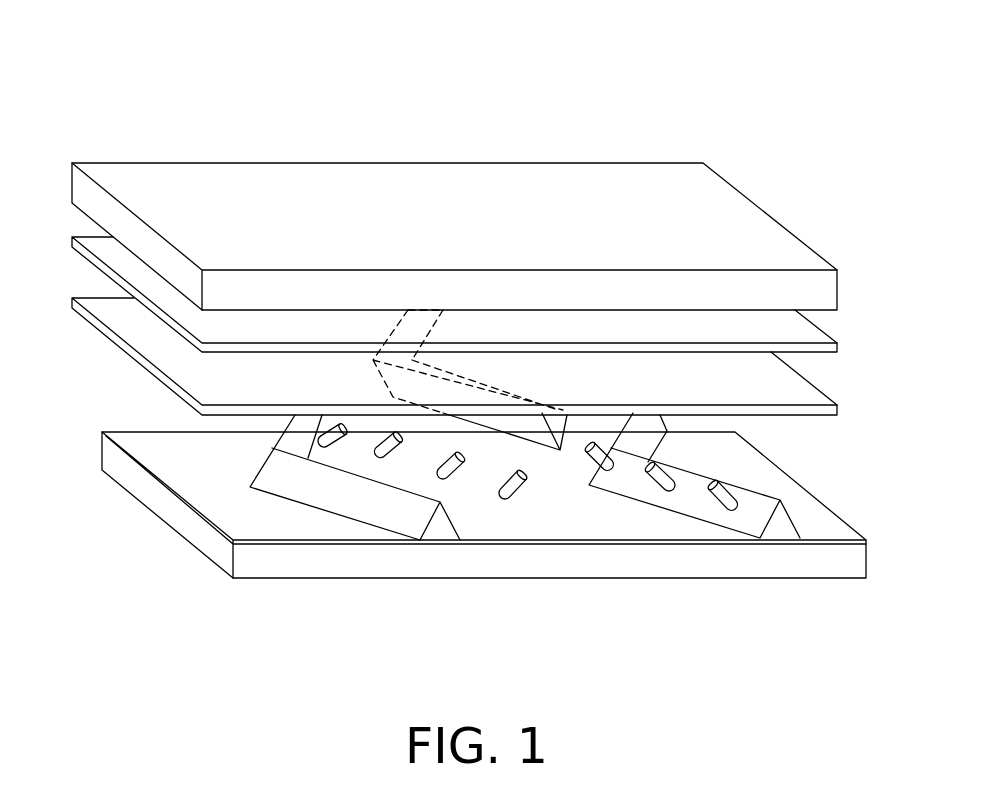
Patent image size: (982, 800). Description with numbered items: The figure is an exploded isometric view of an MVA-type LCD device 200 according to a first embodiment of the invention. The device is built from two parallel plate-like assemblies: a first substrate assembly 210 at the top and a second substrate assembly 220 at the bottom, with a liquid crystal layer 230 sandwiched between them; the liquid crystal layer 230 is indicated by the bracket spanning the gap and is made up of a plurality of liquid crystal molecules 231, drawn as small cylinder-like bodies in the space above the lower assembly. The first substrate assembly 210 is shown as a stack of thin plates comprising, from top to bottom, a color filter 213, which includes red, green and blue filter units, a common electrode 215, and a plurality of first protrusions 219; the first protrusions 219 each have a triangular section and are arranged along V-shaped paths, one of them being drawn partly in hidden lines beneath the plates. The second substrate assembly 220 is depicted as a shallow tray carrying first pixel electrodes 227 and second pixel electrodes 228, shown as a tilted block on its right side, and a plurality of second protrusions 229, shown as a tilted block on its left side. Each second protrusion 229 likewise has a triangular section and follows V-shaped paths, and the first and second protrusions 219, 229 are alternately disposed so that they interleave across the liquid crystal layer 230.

The MVA-type LCD device 200 is at (521, 53).
The first substrate assembly 210 is at (266, 197).
The color filter 213 is at (293, 327).
The common electrode 215 is at (508, 372).
The first protrusions 219 is at (563, 427).
The second substrate assembly 220 is at (482, 558).
The first pixel electrodes 227 is at (694, 526).
The second pixel electrodes 228 is at (682, 540).
The second protrusions 229 is at (380, 502).
The liquid crystal layer 230 is at (107, 340).
The liquid crystal molecules 231 is at (718, 490).